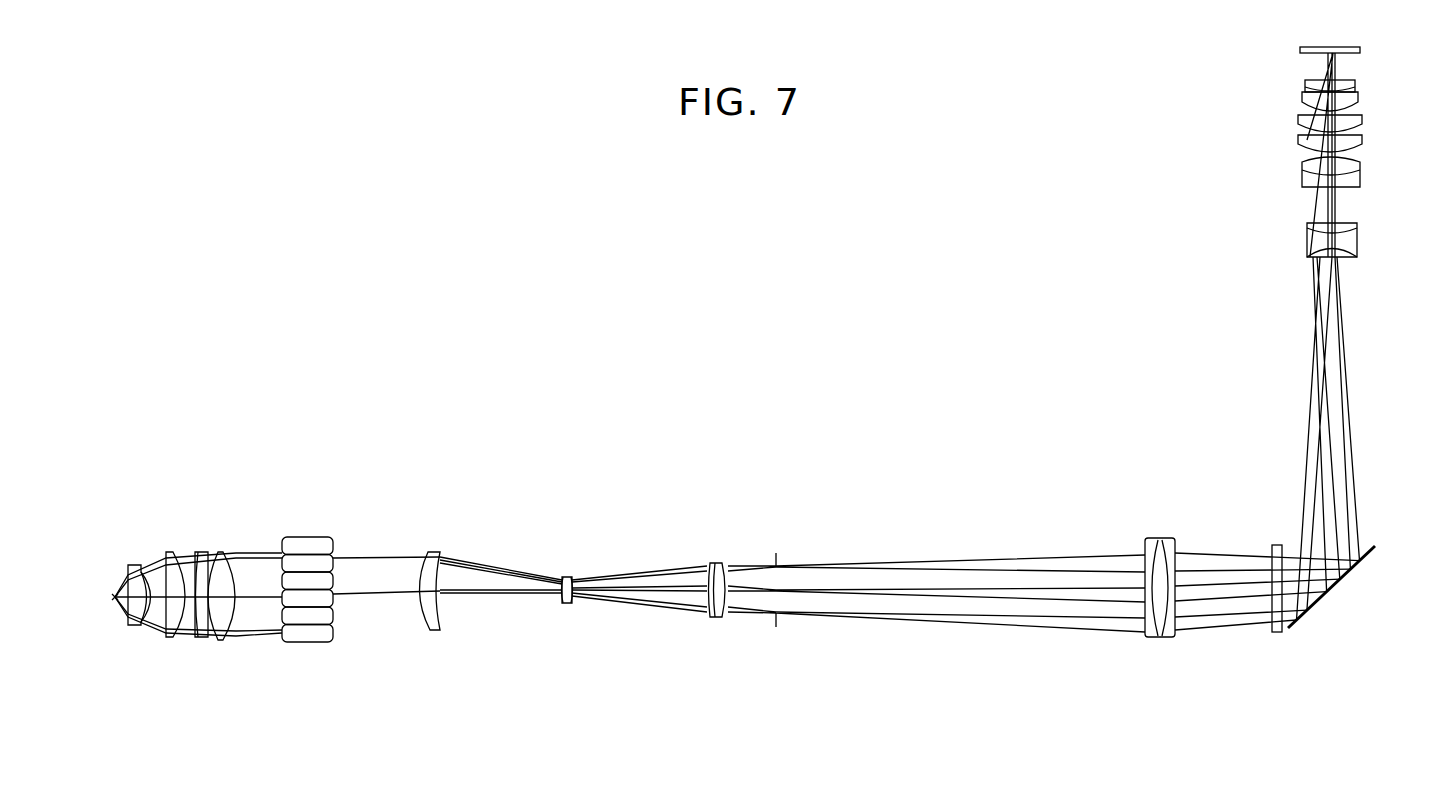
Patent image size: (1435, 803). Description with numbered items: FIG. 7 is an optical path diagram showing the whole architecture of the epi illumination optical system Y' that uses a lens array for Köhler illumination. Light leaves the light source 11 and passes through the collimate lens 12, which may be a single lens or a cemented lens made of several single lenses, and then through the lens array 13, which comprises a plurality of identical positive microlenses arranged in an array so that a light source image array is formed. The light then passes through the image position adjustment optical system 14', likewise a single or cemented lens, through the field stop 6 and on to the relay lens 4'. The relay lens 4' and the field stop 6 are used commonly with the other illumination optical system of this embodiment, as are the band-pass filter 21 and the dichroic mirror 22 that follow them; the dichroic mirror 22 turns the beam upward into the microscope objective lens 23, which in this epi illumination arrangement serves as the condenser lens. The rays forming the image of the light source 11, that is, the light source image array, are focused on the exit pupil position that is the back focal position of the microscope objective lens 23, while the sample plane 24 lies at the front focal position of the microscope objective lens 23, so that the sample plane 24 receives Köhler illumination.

The light source 11 is at (114, 600).
The collimate lens 12 is at (242, 657).
The lens array 13 is at (308, 643).
The image position adjustment optical system 14' is at (572, 627).
The field stop 6 is at (776, 627).
The relay lens 4' is at (1162, 620).
The band-pass filter 21 is at (1277, 632).
The dichroic mirror 22 is at (1376, 552).
The microscope objective lens 23 is at (1382, 80).
The sample plane 24 is at (1362, 50).